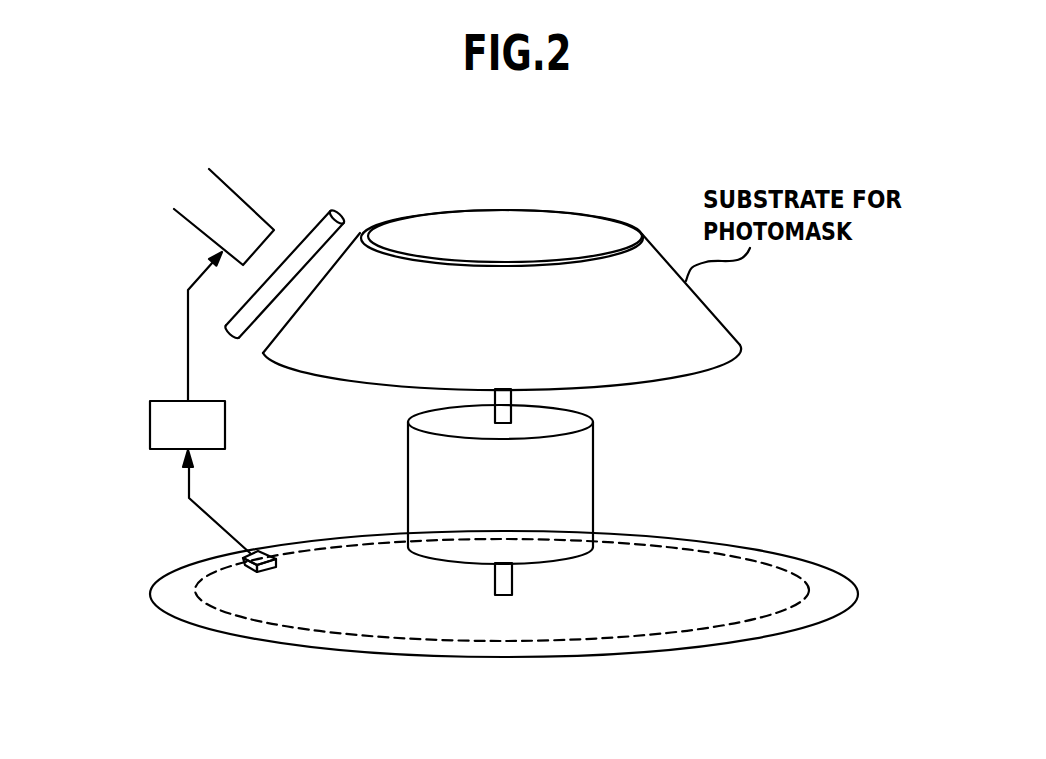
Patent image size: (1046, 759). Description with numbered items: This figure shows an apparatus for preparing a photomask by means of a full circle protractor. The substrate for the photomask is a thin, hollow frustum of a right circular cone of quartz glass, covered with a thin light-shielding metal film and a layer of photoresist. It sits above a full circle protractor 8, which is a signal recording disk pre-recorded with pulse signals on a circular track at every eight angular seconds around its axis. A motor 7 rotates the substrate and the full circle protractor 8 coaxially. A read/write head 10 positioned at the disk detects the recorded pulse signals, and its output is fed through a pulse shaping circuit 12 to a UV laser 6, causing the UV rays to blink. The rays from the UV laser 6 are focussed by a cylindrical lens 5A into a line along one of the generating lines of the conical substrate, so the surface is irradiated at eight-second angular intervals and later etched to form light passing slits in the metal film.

The cylindrical lens 5A is at (314, 218).
The UV laser 6 is at (234, 191).
The motor 7 is at (595, 470).
The full circle protractor 8 is at (733, 543).
The read/write head 10 is at (255, 553).
The pulse shaping circuit 12 is at (200, 402).